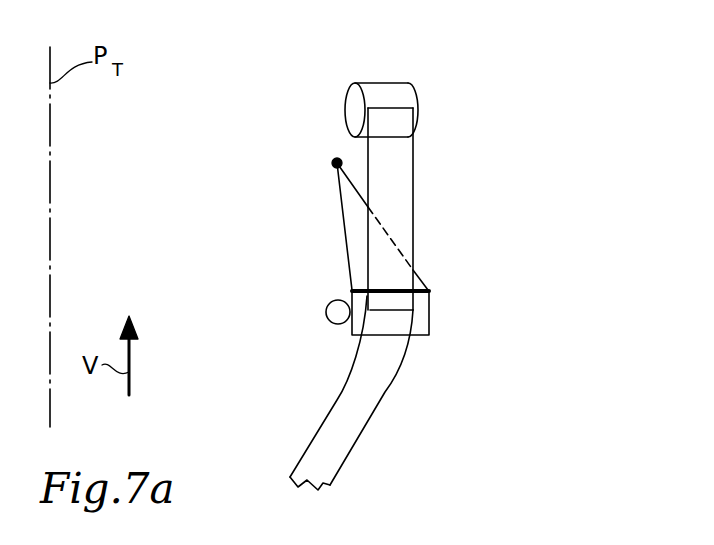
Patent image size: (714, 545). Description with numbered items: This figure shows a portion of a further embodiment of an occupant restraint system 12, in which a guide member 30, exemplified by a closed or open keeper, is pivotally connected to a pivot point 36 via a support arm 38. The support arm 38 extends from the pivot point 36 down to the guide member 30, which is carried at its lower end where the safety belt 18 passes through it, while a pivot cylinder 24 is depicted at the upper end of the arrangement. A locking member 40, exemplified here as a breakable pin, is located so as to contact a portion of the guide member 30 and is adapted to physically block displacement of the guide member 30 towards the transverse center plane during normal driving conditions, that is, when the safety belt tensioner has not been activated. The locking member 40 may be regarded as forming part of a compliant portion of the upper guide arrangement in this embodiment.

The blade assembly 12 is at (500, 142).
The blade 18 is at (340, 432).
The pivot cylinder 24 is at (352, 104).
The guide member 30 is at (413, 337).
The pivot point 36 is at (333, 170).
The support arm 38 is at (352, 225).
The locking member 40 is at (338, 313).